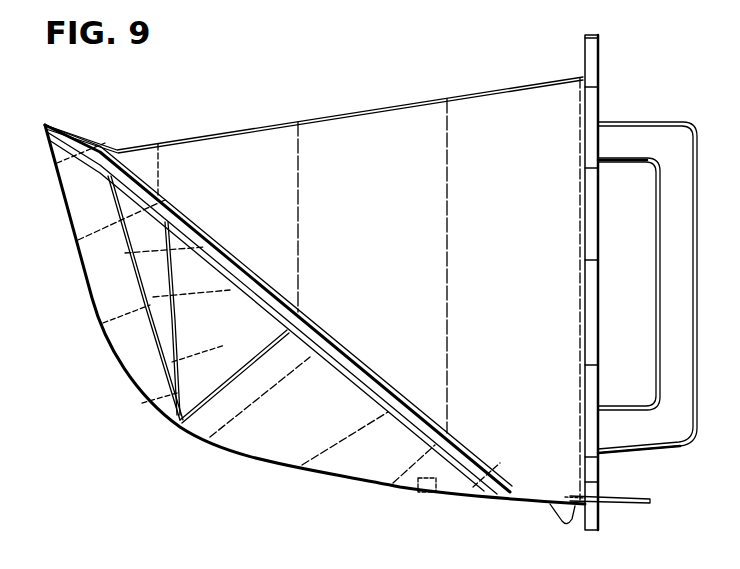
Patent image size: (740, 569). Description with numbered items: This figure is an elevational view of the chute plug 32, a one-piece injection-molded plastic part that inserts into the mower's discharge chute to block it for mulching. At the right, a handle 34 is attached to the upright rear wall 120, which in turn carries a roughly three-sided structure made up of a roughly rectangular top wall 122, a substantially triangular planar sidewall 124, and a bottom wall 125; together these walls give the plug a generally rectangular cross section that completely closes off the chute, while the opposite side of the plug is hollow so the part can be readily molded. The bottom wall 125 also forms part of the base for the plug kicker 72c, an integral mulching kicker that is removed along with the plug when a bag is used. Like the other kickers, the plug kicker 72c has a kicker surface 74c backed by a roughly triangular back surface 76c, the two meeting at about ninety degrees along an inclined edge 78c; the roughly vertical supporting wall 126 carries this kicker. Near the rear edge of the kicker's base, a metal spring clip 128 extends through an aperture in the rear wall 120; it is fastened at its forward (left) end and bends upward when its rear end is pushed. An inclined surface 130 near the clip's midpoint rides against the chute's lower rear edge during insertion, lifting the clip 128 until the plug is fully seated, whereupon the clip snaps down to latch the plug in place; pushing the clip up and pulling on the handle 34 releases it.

The chute plug 32 is at (488, 82).
The handle 34 is at (622, 137).
The plug kicker 72c is at (238, 411).
The kicker surface 74c is at (138, 256).
The back surface 76c is at (212, 365).
The inclined edge 78c is at (172, 356).
The rear wall 120 is at (591, 293).
The top wall 122 is at (363, 111).
The sidewall 124 is at (441, 260).
The bottom wall 125 is at (350, 382).
The supporting wall 126 is at (362, 450).
The spring clip 128 is at (610, 488).
The inclined surface 130 is at (568, 522).